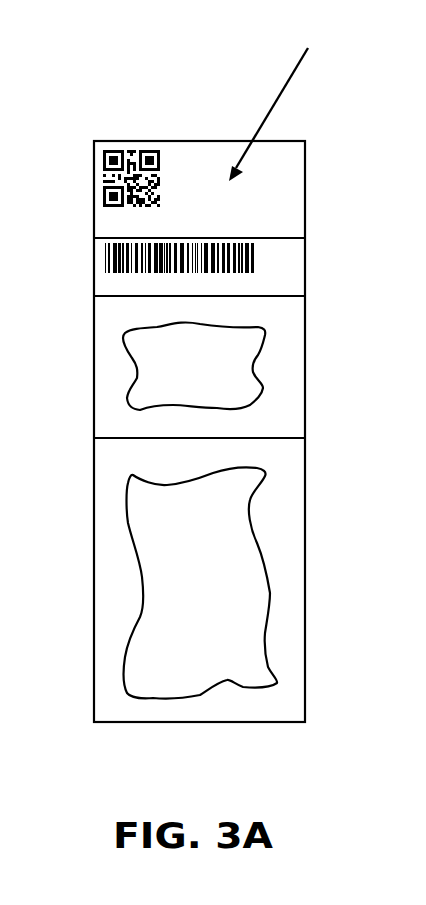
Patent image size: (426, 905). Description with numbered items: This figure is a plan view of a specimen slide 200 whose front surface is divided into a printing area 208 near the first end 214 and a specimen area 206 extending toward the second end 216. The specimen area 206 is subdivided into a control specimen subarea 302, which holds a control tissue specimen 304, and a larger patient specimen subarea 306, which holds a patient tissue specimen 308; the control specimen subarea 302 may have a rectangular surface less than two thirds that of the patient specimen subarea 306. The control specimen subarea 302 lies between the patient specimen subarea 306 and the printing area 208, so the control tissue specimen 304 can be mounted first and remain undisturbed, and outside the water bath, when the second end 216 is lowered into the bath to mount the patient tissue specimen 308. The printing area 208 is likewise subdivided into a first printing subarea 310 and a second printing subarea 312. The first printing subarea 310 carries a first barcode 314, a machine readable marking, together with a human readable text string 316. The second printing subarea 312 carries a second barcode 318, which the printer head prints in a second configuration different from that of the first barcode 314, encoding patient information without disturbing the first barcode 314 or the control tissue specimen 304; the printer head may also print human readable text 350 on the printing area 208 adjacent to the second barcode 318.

The specimen slide 200 is at (128, 74).
The specimen area 206 is at (313, 300).
The printing area 208 is at (313, 141).
The first end 214 is at (172, 141).
The second end 216 is at (145, 723).
The control specimen subarea 302 is at (107, 347).
The control tissue specimen 304 is at (148, 387).
The patient specimen subarea 306 is at (110, 520).
The patient tissue specimen 308 is at (162, 598).
The first printing subarea 310 is at (265, 255).
The second printing subarea 312 is at (201, 155).
The first barcode 314 is at (110, 260).
The human readable text string 316 is at (94, 289).
The second barcode 318 is at (104, 169).
The human readable text 350 is at (278, 101).